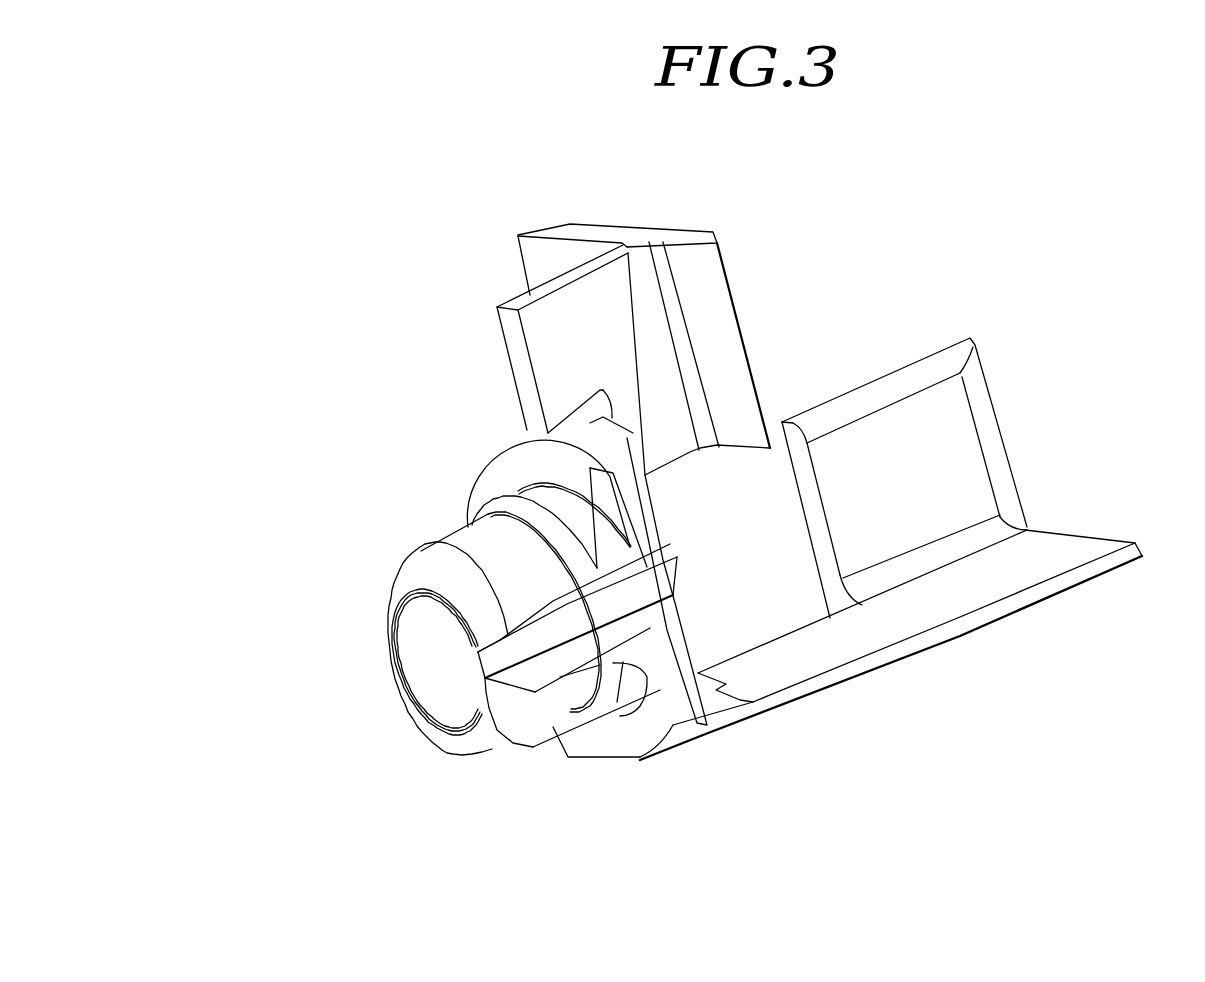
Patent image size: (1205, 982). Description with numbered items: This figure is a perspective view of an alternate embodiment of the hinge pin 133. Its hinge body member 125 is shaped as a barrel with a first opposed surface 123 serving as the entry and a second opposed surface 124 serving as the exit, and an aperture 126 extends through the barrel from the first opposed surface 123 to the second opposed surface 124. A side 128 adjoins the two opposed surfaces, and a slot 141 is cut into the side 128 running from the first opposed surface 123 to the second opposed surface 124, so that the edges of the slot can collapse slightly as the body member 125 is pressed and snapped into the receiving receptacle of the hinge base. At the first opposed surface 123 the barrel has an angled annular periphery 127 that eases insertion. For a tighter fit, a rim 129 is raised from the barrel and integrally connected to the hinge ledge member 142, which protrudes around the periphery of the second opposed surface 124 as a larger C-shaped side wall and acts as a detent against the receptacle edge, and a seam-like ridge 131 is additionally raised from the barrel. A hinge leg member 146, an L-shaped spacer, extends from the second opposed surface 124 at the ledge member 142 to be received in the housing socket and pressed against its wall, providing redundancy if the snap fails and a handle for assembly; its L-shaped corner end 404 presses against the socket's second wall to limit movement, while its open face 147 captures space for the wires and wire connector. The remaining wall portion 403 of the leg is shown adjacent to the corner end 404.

The first side wall 403 is at (642, 238).
The L shape corner end 404 is at (1027, 527).
The hinge leg member 146 is at (1042, 593).
The open face 147 is at (897, 623).
The hinge ledge member 142 is at (490, 452).
The rim 129 is at (547, 488).
The hinge body member 125 is at (460, 548).
The first opposed surface 123 is at (412, 571).
The aperture 126 is at (422, 647).
The angled annular periphery 127 is at (427, 720).
The slot 141 is at (538, 641).
The second opposed surface 124 is at (618, 528).
The side 128 is at (603, 648).
The seam-like ridge 131 is at (600, 713).
The hinge pin 133 is at (1044, 820).